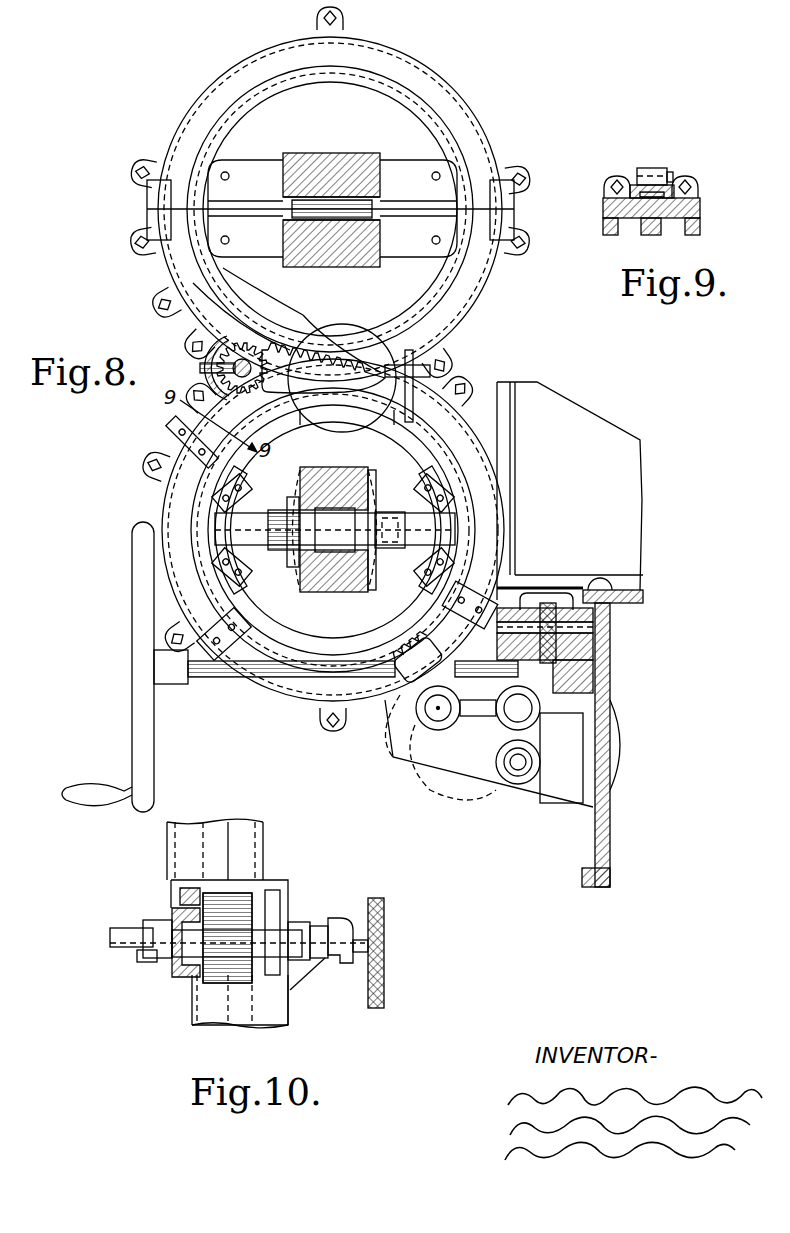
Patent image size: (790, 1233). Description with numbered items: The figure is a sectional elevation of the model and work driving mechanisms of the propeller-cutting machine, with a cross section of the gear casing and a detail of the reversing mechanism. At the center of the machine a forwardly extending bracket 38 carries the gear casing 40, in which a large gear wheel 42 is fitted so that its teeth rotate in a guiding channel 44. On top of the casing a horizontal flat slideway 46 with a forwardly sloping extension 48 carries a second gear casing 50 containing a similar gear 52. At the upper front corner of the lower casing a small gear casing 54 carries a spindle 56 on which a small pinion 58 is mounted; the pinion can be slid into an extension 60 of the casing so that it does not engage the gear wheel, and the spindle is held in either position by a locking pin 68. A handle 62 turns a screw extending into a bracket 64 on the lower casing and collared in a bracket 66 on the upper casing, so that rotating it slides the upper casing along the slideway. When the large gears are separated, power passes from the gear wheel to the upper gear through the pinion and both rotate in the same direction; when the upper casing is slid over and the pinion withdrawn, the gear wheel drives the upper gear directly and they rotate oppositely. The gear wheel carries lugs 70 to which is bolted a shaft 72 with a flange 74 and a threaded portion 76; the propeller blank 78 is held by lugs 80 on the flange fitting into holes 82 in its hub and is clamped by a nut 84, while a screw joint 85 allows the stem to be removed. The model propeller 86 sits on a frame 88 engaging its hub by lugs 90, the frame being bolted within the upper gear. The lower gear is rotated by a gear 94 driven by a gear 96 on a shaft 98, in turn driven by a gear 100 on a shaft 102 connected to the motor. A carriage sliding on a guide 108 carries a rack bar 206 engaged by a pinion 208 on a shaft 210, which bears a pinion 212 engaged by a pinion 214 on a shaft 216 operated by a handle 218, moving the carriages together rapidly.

In FIG. 8, the bracket 38 is at (573, 768).
In FIG. 8, the gear casing 40 is at (287, 693).
In FIG. 9, the gear casing 40 is at (610, 210).
In FIG. 10, the gear casing 40 is at (267, 1005).
In FIG. 8, the gear wheel 42 is at (413, 360).
In FIG. 9, the gear wheel 42 is at (650, 223).
In FIG. 10, the gear wheel 42 is at (223, 975).
In FIG. 9, the guiding channel 44 is at (670, 185).
In FIG. 8, the horizontal flat slideway 46 is at (413, 377).
In FIG. 10, the horizontal flat slideway 46 is at (130, 948).
In FIG. 8, the forwardly sloping extension 48 is at (224, 326).
In FIG. 8, the second gear casing 50 is at (448, 118).
In FIG. 10, the second gear casing 50 is at (238, 843).
In FIG. 8, the gear 52 is at (270, 345).
In FIG. 10, the gear 52 is at (188, 897).
In FIG. 8, the small gear casing 54 is at (214, 360).
In FIG. 10, the small gear casing 54 is at (173, 970).
In FIG. 8, the spindle 56 is at (282, 363).
In FIG. 10, the spindle 56 is at (297, 937).
In FIG. 10, the small pinion 58 is at (153, 928).
In FIG. 10, the extension 60 is at (170, 963).
In FIG. 10, the handle 62 is at (385, 940).
In FIG. 10, the bracket 64 is at (303, 965).
In FIG. 10, the bracket 66 is at (330, 920).
In FIG. 8, the locking pin 68 is at (235, 368).
In FIG. 8, the lugs 70 is at (430, 600).
In FIG. 8, the shaft 72 is at (360, 540).
In FIG. 8, the flange 74 is at (377, 480).
In FIG. 8, the threaded portion 76 is at (278, 512).
In FIG. 8, the propeller blank 78 is at (300, 573).
In FIG. 8, the lugs 80 is at (366, 483).
In FIG. 8, the holes 82 is at (310, 465).
In FIG. 8, the nut 84 is at (290, 553).
In FIG. 8, the screw joint 85 is at (380, 515).
In FIG. 8, the model propeller 86 is at (342, 173).
In FIG. 8, the frame 88 is at (403, 177).
In FIG. 8, the lugs 90 is at (375, 210).
In FIG. 8, the gear 94 is at (430, 677).
In FIG. 8, the gear 96 is at (497, 737).
In FIG. 8, the shaft 98 is at (523, 708).
In FIG. 8, the gear 100 is at (520, 787).
In FIG. 8, the shaft 102 is at (517, 762).
In FIG. 8, the guide 108 is at (607, 580).
In FIG. 8, the rack bar 206 is at (558, 610).
In FIG. 8, the pinion 208 is at (623, 590).
In FIG. 8, the shaft 210 is at (612, 618).
In FIG. 8, the pinion 212 is at (538, 603).
In FIG. 8, the pinion 214 is at (553, 690).
In FIG. 8, the shaft 216 is at (222, 690).
In FIG. 8, the handle 218 is at (138, 684).